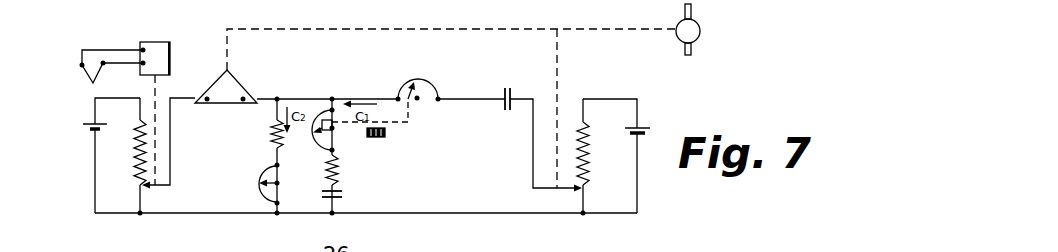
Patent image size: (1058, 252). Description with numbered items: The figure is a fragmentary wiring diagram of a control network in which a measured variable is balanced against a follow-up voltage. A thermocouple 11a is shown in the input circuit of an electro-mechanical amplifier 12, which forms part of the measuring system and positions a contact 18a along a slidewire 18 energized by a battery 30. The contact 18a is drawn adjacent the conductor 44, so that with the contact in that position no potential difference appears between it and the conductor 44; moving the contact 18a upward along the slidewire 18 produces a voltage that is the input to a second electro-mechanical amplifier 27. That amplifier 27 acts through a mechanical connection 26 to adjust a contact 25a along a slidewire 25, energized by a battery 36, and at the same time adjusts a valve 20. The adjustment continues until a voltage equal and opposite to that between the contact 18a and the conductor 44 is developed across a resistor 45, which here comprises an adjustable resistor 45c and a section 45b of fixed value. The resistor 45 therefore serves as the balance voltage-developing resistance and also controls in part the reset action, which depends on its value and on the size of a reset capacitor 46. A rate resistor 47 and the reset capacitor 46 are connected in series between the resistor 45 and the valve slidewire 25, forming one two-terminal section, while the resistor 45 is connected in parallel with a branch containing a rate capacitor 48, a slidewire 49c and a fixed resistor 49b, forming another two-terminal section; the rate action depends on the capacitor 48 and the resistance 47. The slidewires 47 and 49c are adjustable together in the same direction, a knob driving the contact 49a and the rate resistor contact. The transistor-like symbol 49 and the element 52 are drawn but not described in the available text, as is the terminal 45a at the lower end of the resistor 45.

The thermocouple 11a is at (88, 75).
The electro-mechanical amplifier 12 is at (171, 55).
The slidewire 18 is at (138, 148).
The contact 18a is at (158, 187).
The valve 20 is at (702, 38).
The slidewire 25 is at (590, 155).
The movable cooperating contact 25a is at (572, 192).
The mechanical connection 26 is at (347, 28).
The electro-mechanical amplifier 27 is at (240, 84).
The battery 30 is at (85, 128).
The battery 36 is at (650, 128).
The conductor 44 is at (470, 215).
The resistor 45 is at (268, 156).
The potentiometer terminal 45a is at (278, 185).
The fixed resistor section 45b is at (270, 130).
The adjustable resistor 45c is at (259, 177).
The reset capacitor 46 is at (512, 92).
The rate resistor 47 is at (437, 84).
The rate capacitor 48 is at (345, 195).
The transistor 49 is at (342, 128).
The contact 49a is at (317, 135).
The fixed resistor 49b is at (339, 182).
The slidewire 49c is at (327, 110).
The heater element 52 is at (387, 133).